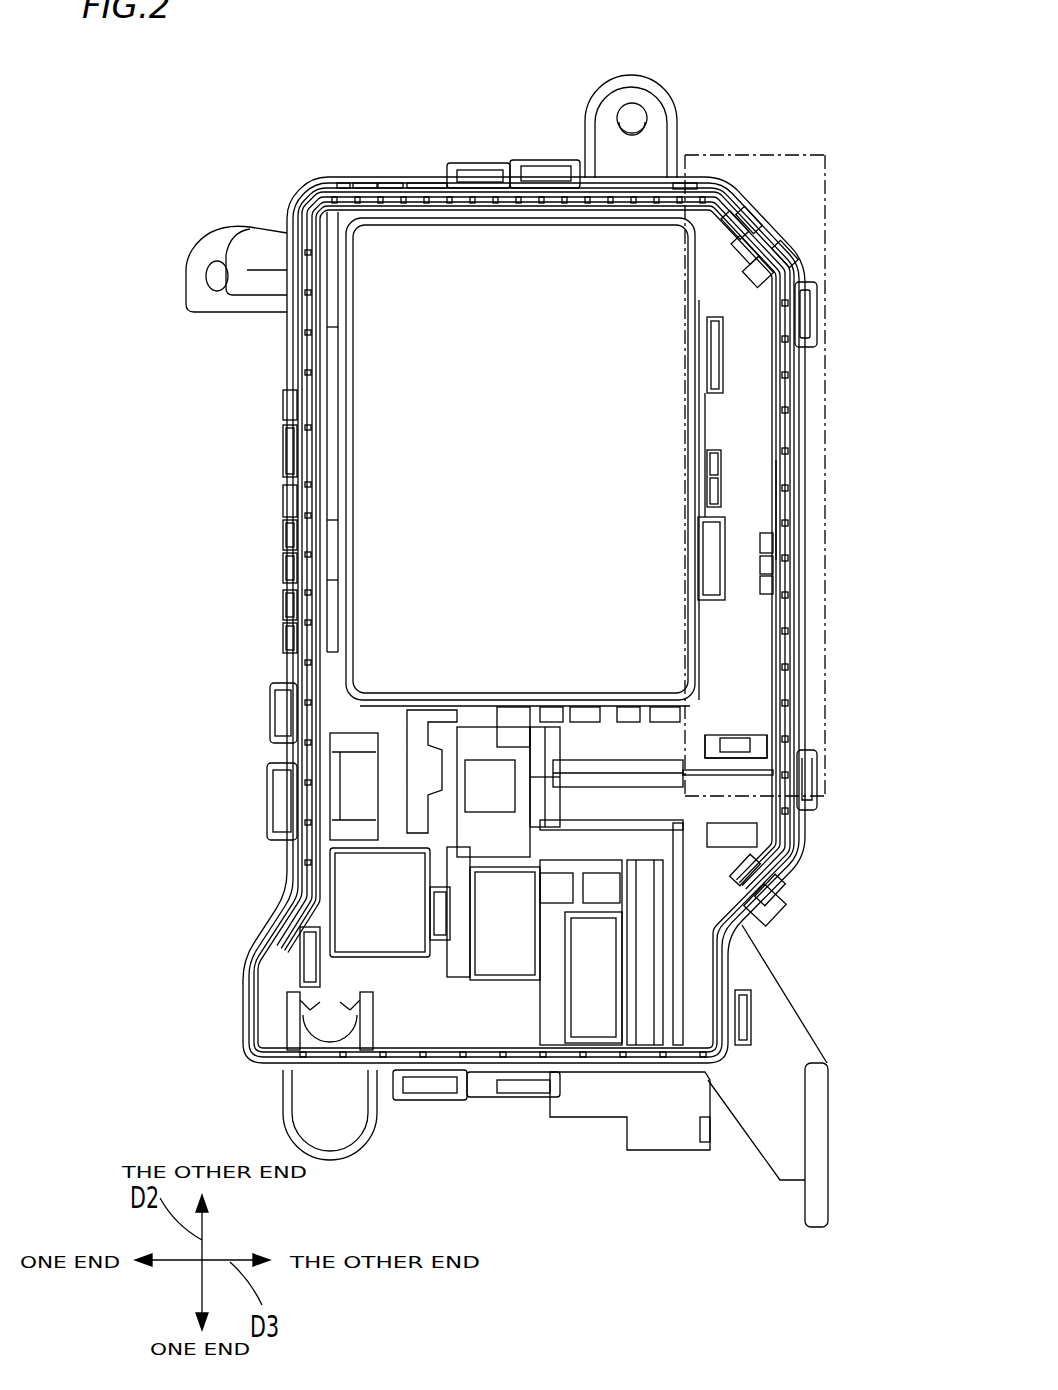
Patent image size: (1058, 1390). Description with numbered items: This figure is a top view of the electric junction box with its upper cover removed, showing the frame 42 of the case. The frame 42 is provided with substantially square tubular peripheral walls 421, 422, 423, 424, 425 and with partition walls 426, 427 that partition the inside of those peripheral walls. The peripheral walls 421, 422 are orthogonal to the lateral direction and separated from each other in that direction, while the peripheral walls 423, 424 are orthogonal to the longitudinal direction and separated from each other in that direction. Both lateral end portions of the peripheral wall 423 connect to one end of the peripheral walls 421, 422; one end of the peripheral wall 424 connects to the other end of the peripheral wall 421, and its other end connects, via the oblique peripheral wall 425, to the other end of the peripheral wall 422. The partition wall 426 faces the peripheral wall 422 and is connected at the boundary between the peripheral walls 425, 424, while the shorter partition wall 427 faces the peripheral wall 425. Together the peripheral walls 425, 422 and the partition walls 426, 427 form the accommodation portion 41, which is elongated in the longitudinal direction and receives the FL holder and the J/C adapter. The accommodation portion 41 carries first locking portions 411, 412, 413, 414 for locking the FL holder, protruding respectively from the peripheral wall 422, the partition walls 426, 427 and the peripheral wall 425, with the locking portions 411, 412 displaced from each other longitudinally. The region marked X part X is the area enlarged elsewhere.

The accommodation portion 41 is at (769, 414).
The first locking portion 411 is at (773, 560).
The first locking portion 412 is at (720, 482).
The first locking portion 413 is at (733, 737).
The first locking portion 414 is at (788, 256).
The frame 42 is at (277, 413).
The peripheral wall 421 is at (320, 472).
The peripheral wall 422 is at (787, 513).
The peripheral wall 423 is at (490, 1062).
The peripheral wall 424 is at (487, 178).
The peripheral wall 425 is at (762, 222).
The partition wall 426 is at (692, 460).
The partition wall 427 is at (757, 747).
The X part X is at (745, 152).